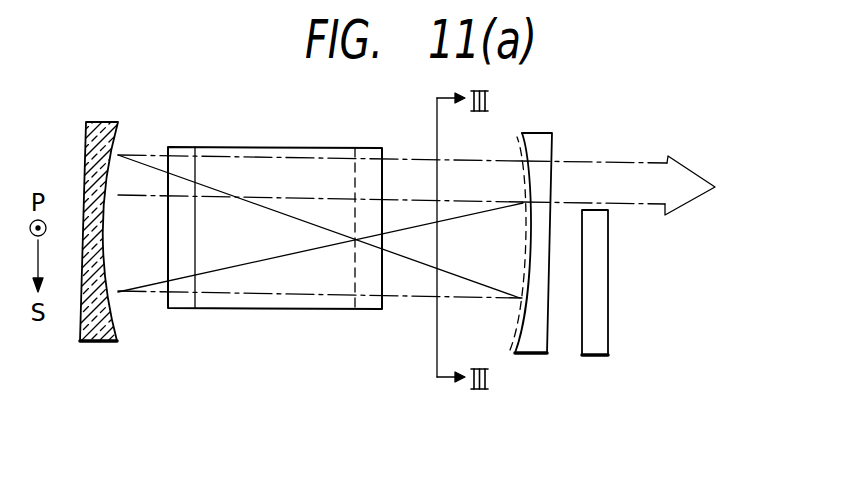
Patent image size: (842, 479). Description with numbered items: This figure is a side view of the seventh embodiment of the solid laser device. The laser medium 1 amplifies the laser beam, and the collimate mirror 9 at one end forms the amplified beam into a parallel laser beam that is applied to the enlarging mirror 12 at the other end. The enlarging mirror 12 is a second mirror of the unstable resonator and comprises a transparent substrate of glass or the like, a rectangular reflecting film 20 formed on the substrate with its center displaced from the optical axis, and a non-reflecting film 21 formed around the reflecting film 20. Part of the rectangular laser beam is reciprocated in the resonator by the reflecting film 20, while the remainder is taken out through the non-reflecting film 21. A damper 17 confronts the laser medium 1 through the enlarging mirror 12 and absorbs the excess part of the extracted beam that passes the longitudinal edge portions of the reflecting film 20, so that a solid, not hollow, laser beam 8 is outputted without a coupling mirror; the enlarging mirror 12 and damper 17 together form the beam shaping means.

The laser medium 1 is at (224, 146).
The solid laser beam 8 is at (688, 166).
The collimate mirror 9 is at (107, 343).
The enlarging mirror 12 is at (507, 270).
The damper 17 is at (598, 356).
The reflecting film 20 is at (525, 270).
The non-reflecting film 21 is at (520, 153).